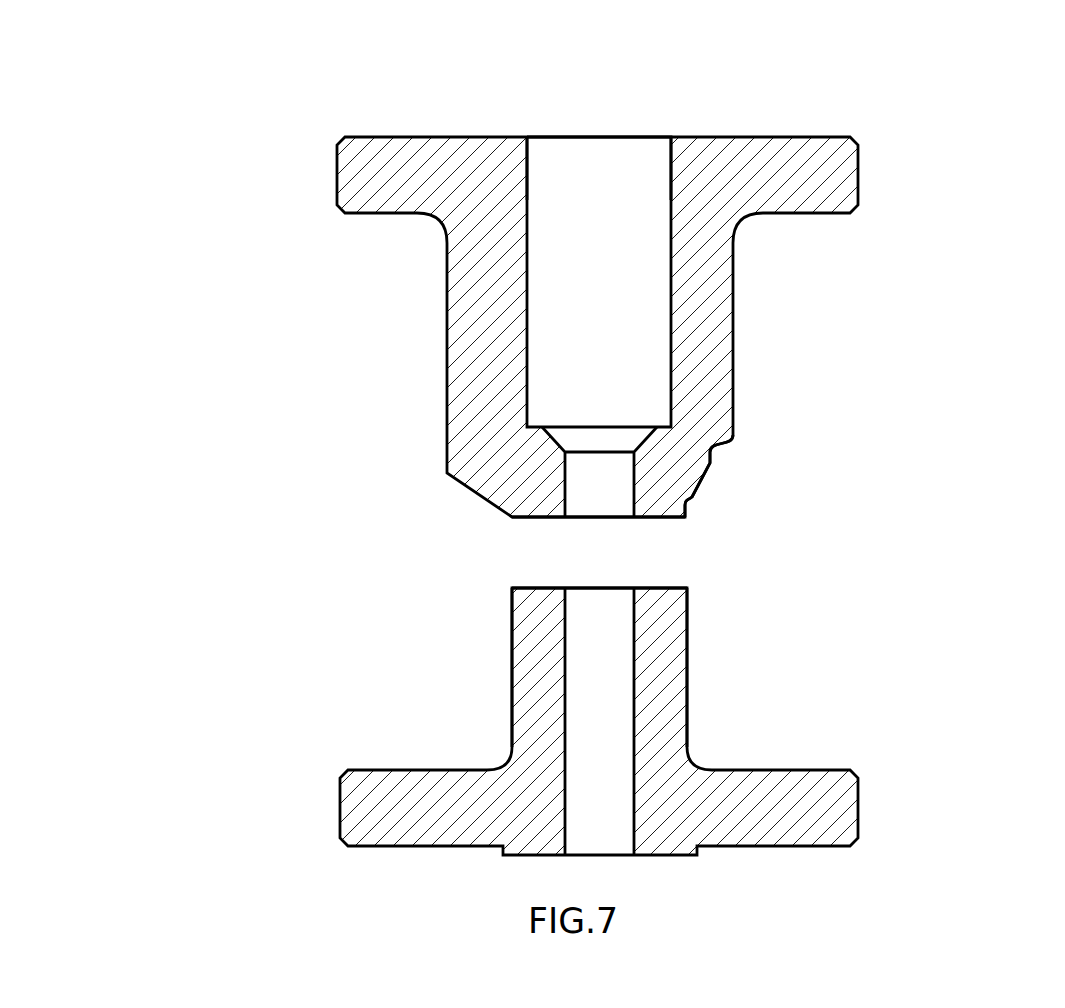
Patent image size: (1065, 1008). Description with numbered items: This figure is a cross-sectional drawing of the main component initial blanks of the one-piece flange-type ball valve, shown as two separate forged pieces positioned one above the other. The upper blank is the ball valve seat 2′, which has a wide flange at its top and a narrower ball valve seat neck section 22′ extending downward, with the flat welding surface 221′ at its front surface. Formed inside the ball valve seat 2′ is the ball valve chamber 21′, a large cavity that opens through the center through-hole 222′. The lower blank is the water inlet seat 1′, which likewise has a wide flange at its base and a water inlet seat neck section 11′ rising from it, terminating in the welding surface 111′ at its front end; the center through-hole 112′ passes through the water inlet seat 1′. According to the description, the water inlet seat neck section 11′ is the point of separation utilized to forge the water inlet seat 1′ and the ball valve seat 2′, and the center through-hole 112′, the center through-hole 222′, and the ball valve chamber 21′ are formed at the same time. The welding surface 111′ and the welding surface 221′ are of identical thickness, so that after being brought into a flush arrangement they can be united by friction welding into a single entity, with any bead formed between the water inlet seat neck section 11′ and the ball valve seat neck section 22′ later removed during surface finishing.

The water inlet seat 1′ is at (302, 818).
The water inlet seat neck section 11′ is at (505, 623).
The welding surface 111′ is at (540, 585).
The center through-hole 112′ is at (588, 713).
The ball valve seat 2′ is at (893, 196).
The ball valve chamber 21′ is at (572, 370).
The ball valve seat neck section 22′ is at (706, 507).
The welding surface 221′ is at (668, 517).
The center through-hole 222′ is at (598, 183).